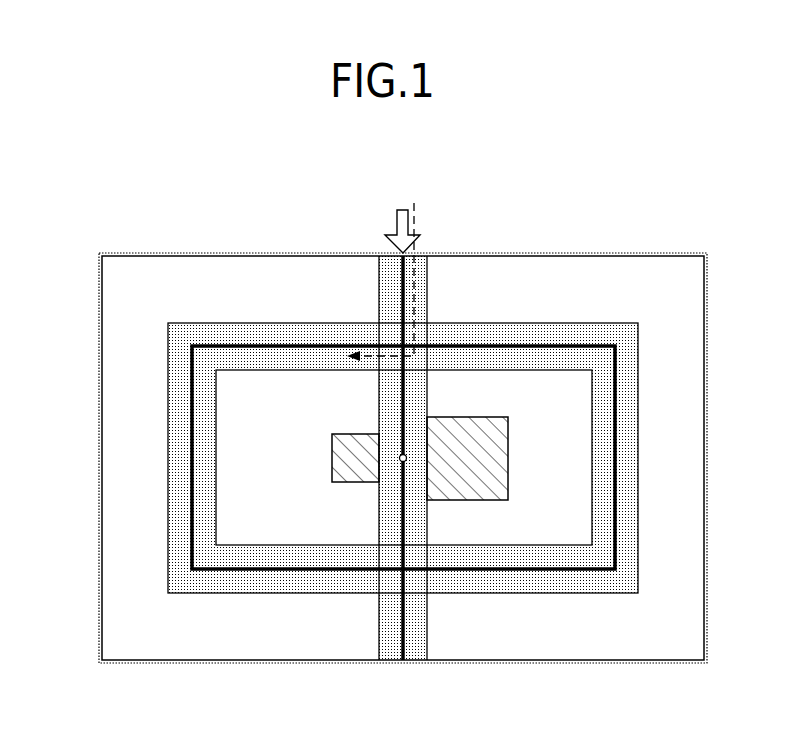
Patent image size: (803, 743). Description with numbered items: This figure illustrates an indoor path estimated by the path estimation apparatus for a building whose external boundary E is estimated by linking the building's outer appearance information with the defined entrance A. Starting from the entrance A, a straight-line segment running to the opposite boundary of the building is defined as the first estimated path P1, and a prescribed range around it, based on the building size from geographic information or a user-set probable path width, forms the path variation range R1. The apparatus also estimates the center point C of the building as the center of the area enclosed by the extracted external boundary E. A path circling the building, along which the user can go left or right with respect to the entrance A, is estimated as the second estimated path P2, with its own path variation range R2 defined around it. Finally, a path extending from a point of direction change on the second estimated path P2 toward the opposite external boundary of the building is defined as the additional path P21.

The external boundary E is at (633, 253).
The path variation range R2 is at (168, 370).
The additional path P21 is at (192, 447).
The second estimated path P2 is at (232, 346).
The path variation range R1 is at (427, 291).
The first estimated path P1 is at (403, 288).
The entrance A is at (410, 244).
The center point C is at (406, 459).